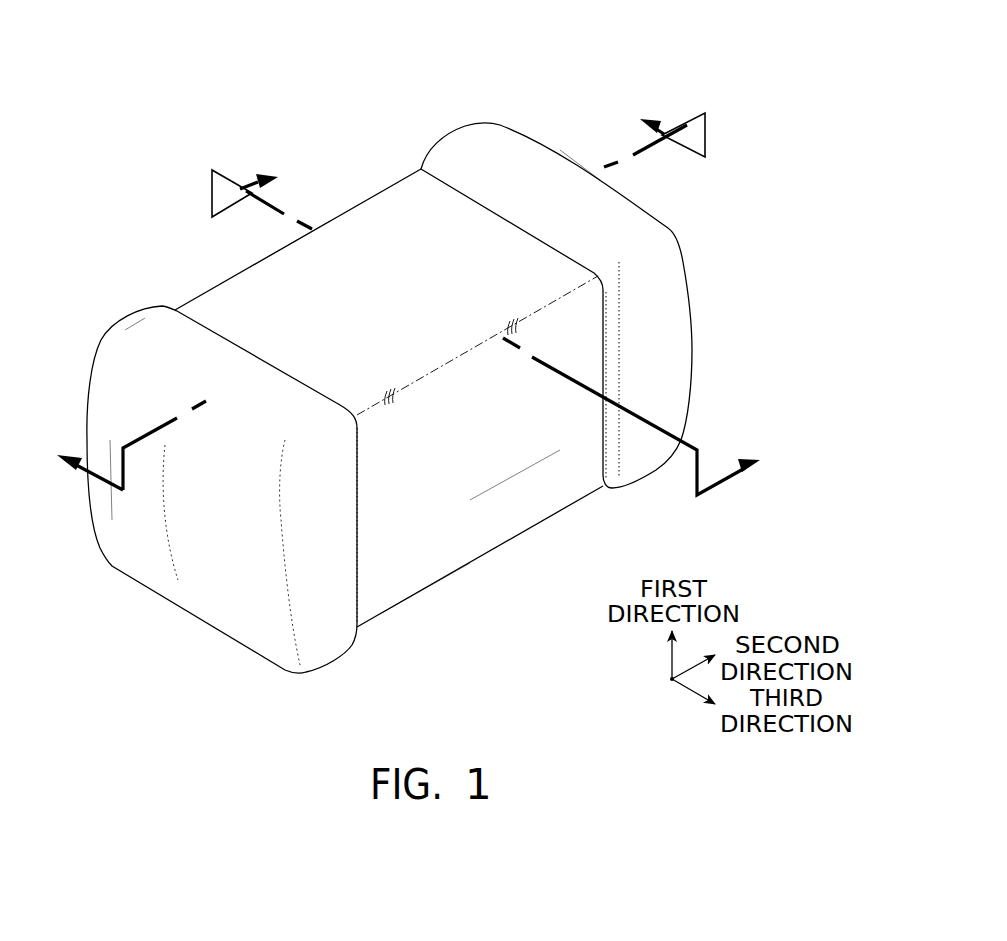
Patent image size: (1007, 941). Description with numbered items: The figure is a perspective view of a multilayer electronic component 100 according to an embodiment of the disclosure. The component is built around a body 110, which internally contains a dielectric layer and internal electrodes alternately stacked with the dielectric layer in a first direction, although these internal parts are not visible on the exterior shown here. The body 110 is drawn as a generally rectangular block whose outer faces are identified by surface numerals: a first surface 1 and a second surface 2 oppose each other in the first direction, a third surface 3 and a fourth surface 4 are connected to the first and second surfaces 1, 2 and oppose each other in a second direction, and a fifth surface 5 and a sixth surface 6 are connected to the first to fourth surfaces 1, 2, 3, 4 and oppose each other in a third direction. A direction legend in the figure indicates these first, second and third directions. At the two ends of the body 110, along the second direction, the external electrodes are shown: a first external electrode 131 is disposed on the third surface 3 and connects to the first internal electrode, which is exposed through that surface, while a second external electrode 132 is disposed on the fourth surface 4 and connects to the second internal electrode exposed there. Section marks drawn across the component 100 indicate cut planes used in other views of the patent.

The multilayer electronic component 100 is at (272, 66).
The body 110 is at (357, 212).
The first external electrode 131 is at (141, 318).
The second external electrode 132 is at (463, 140).
The first surface 1 is at (457, 575).
The second surface 2 is at (408, 195).
The third surface 3 is at (132, 550).
The fourth surface 4 is at (535, 149).
The fifth surface 5 is at (196, 295).
The sixth surface 6 is at (528, 504).